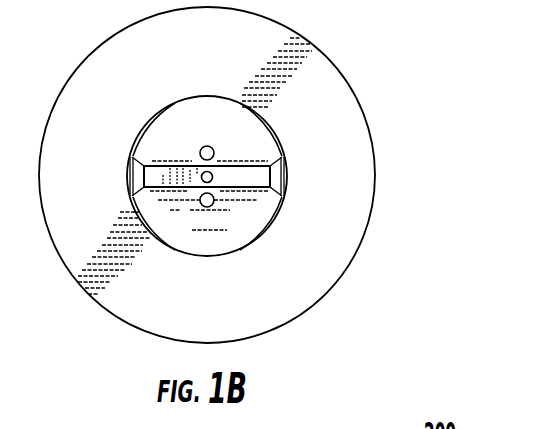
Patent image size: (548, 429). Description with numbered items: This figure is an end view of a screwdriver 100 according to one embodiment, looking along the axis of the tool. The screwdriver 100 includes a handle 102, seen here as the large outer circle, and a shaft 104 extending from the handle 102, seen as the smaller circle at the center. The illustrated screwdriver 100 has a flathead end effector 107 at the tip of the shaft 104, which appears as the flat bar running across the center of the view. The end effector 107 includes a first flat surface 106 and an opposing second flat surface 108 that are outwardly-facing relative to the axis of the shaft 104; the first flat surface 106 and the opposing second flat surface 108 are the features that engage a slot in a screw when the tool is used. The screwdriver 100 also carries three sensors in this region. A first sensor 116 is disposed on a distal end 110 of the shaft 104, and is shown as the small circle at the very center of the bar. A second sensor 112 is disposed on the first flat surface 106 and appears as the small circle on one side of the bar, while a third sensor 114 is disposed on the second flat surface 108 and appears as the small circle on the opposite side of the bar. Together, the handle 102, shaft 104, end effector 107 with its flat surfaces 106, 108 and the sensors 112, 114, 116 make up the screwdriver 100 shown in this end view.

The screwdriver 100 is at (349, 63).
The handle 102 is at (331, 158).
The shaft 104 is at (262, 238).
The first flat surface 106 is at (163, 150).
The flathead end effector 107 is at (150, 262).
The second flat surface 108 is at (150, 196).
The distal end 110 is at (242, 170).
The second sensor 112 is at (206, 146).
The third sensor 114 is at (206, 207).
The first sensor 116 is at (213, 178).